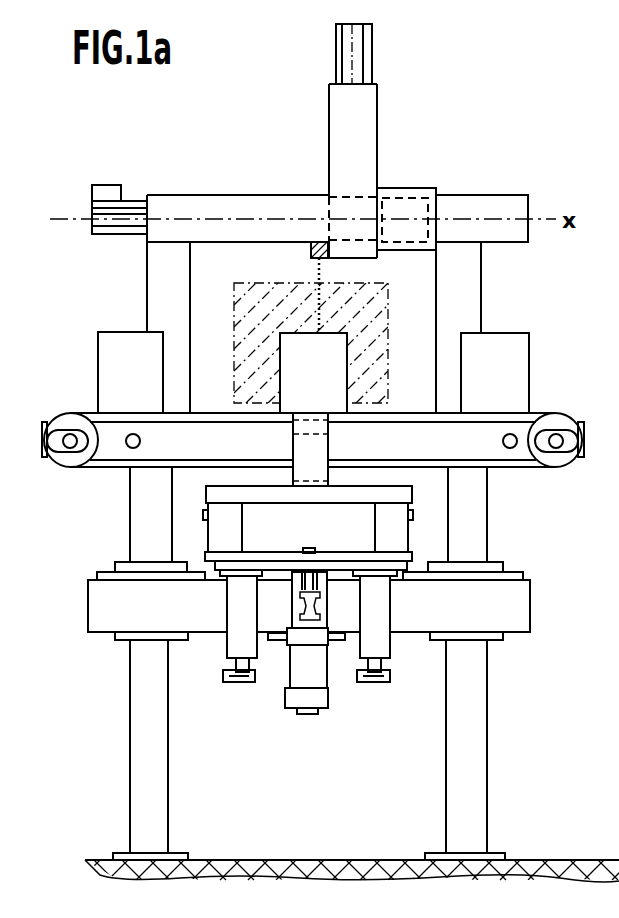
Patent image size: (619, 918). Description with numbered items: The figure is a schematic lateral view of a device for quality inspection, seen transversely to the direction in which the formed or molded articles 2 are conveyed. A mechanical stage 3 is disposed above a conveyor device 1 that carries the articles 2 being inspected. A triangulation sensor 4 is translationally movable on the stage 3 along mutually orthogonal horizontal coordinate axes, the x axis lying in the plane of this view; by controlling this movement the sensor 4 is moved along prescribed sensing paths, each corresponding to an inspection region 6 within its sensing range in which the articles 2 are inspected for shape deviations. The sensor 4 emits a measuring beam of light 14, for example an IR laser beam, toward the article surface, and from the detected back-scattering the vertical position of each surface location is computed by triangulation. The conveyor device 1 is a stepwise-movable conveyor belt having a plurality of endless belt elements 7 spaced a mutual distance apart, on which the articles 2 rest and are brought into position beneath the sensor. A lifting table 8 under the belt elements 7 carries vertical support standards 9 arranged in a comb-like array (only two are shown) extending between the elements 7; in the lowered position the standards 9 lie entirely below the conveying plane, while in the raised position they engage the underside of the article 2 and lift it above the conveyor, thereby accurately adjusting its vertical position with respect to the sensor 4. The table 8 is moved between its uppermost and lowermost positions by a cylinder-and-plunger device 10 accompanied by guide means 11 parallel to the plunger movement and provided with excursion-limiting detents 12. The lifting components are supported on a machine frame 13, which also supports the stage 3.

The conveyor device 1 is at (520, 432).
The articles 2 is at (105, 345).
The mechanical stage 3 is at (302, 210).
The triangulation sensor 4 is at (310, 245).
The inspection region 6 is at (368, 312).
The endless belt elements 7 is at (313, 428).
The lifting table 8 is at (398, 492).
The vertical support standards 9 is at (297, 442).
The cylinder-and-plunger device 10 is at (295, 673).
The guide means 11 is at (236, 642).
The excursion-limiting detents 12 is at (374, 683).
The machine frame 13 is at (477, 757).
The measuring beam of light 14 is at (318, 277).